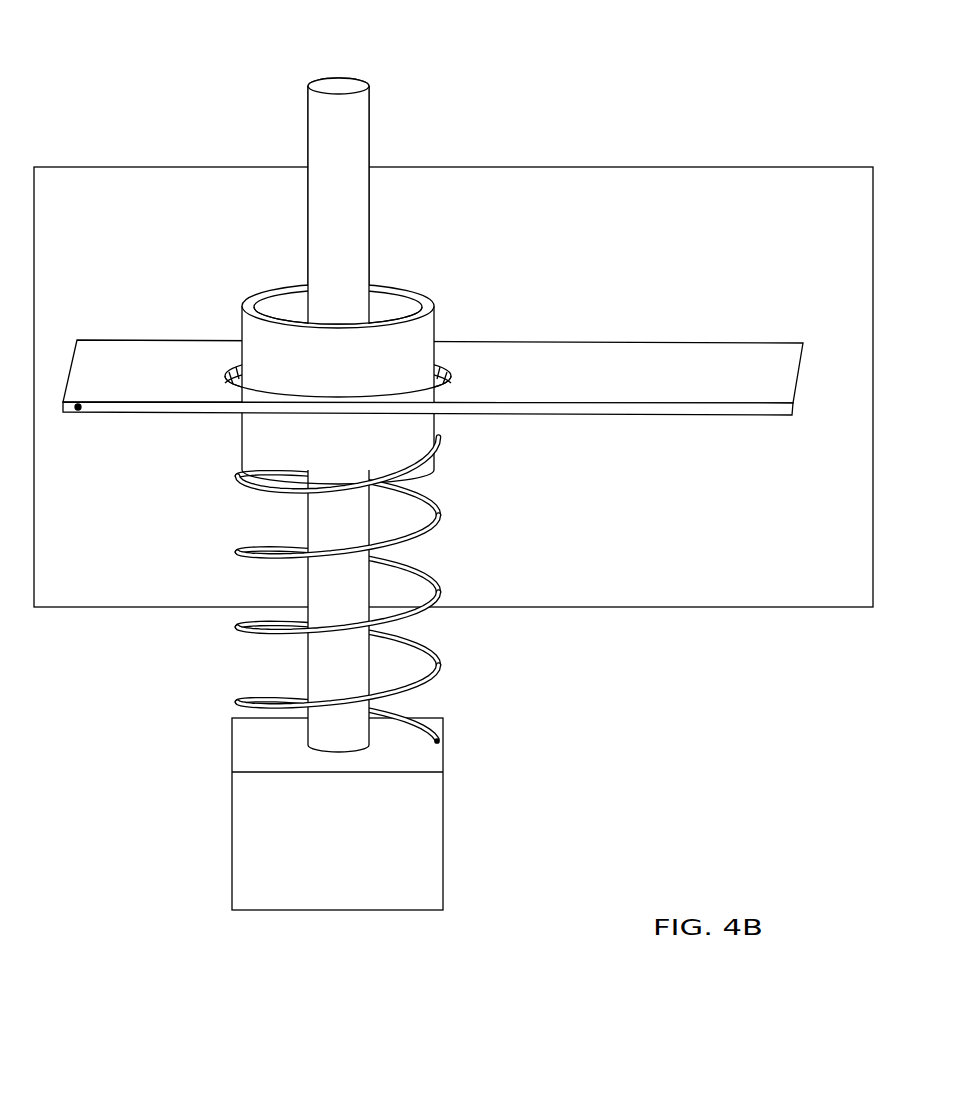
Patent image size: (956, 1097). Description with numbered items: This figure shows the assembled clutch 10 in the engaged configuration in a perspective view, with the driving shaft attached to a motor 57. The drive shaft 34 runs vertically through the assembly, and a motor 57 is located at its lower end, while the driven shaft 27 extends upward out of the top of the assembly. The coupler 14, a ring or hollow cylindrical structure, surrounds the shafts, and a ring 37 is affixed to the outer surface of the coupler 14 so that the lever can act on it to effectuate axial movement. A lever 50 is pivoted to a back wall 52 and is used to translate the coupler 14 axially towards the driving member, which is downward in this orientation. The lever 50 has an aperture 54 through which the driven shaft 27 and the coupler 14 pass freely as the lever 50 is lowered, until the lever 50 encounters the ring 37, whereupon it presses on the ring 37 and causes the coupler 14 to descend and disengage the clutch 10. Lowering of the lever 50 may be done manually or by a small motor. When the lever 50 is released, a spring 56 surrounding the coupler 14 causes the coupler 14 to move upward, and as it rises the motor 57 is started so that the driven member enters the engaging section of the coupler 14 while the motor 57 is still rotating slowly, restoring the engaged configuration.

The clutch 10 is at (134, 66).
The coupler 14 is at (242, 453).
The driven shaft 27 is at (308, 121).
The drive shaft 34 is at (308, 519).
The ring 37 is at (336, 417).
The lever 50 is at (718, 344).
The back wall 52 is at (188, 167).
The aperture 54 is at (226, 376).
The spring 56 is at (250, 638).
The motor 57 is at (232, 823).